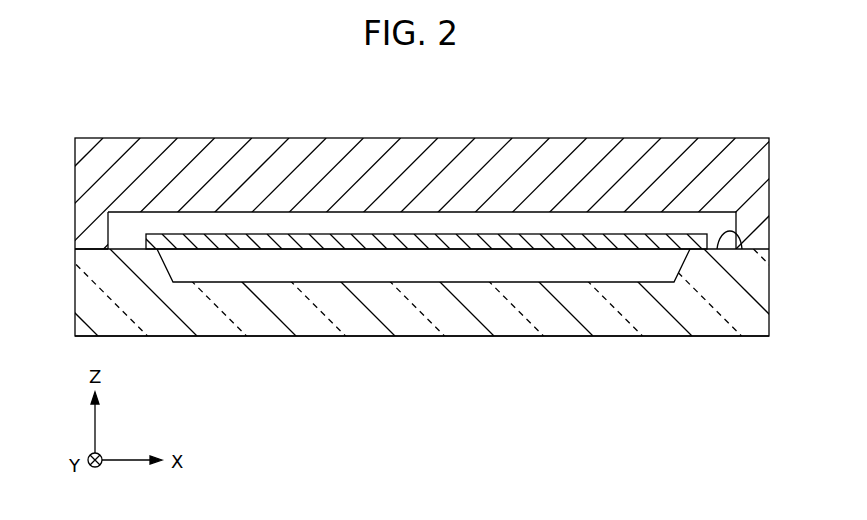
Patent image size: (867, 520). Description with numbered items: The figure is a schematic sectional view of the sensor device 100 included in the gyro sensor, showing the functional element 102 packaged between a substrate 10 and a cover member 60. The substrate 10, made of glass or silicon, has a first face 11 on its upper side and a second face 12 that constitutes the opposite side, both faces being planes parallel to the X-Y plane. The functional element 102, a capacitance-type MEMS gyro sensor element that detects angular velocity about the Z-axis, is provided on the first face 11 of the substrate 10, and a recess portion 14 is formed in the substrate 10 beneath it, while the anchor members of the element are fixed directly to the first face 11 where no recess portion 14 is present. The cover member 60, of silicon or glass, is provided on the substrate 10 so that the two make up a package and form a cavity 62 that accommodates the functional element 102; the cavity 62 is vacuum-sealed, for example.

The sensor device 100 is at (680, 100).
The cover member 60 is at (183, 153).
The cavity 62 is at (128, 240).
The functional element 102 is at (401, 214).
The first face 11 is at (742, 249).
The substrate 10 is at (512, 327).
The recess portion 14 is at (417, 283).
The second face 12 is at (130, 337).